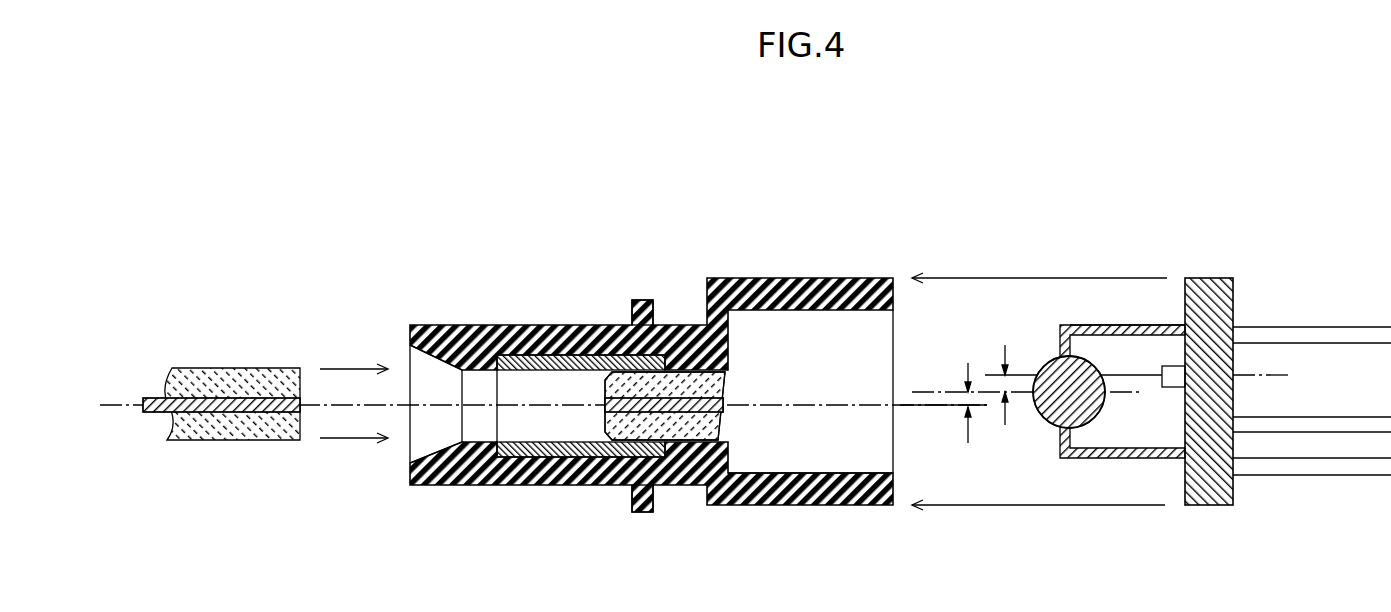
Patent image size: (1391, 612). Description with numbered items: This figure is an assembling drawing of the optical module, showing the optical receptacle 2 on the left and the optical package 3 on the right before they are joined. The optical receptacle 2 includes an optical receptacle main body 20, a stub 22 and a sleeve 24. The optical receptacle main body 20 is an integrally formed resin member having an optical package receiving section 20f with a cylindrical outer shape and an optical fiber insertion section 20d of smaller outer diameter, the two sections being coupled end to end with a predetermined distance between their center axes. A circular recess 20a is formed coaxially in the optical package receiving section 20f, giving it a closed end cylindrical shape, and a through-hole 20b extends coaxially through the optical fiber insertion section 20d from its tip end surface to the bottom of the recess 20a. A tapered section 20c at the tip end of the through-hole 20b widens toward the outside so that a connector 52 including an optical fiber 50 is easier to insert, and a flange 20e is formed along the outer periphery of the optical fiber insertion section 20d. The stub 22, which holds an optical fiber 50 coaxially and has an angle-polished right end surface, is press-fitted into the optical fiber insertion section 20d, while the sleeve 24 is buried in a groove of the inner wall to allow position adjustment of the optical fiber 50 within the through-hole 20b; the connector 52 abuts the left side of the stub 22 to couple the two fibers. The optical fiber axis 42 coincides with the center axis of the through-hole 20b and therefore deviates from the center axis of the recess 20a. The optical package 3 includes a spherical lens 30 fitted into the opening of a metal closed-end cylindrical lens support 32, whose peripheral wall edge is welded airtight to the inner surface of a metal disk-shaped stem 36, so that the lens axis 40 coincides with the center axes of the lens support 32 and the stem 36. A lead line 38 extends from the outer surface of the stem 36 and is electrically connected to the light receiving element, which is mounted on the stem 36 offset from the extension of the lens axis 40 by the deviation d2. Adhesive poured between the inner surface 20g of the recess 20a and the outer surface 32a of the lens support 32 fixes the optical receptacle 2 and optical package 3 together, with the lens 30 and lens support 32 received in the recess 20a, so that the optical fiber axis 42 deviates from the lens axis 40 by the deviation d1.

The optical receptacle 2 is at (616, 419).
The optical package 3 is at (1145, 419).
The optical receptacle main body 20 is at (616, 397).
The recess 20a is at (832, 370).
The through-hole 20b is at (568, 400).
The tapered section 20c is at (410, 452).
The optical fiber insertion section 20d is at (432, 326).
The flange 20e is at (642, 513).
The optical package receiving section 20f is at (738, 278).
The inner surface 20g is at (853, 473).
The stub 22 is at (718, 432).
The sleeve 24 is at (533, 441).
The lens 30 is at (1100, 414).
The lens support 32 is at (1075, 325).
The outer surface 32a is at (1115, 325).
The stem 36 is at (1207, 278).
The lead line 38 is at (1318, 327).
The lens axis 40 is at (924, 390).
The optical fiber axis 42 is at (923, 409).
The optical fiber 50 is at (157, 398).
The connector 52 is at (225, 440).
The deviation between optical fiber axis and lens axis d1 is at (964, 414).
The deviation of light receiving element from lens axis d2 is at (1002, 397).